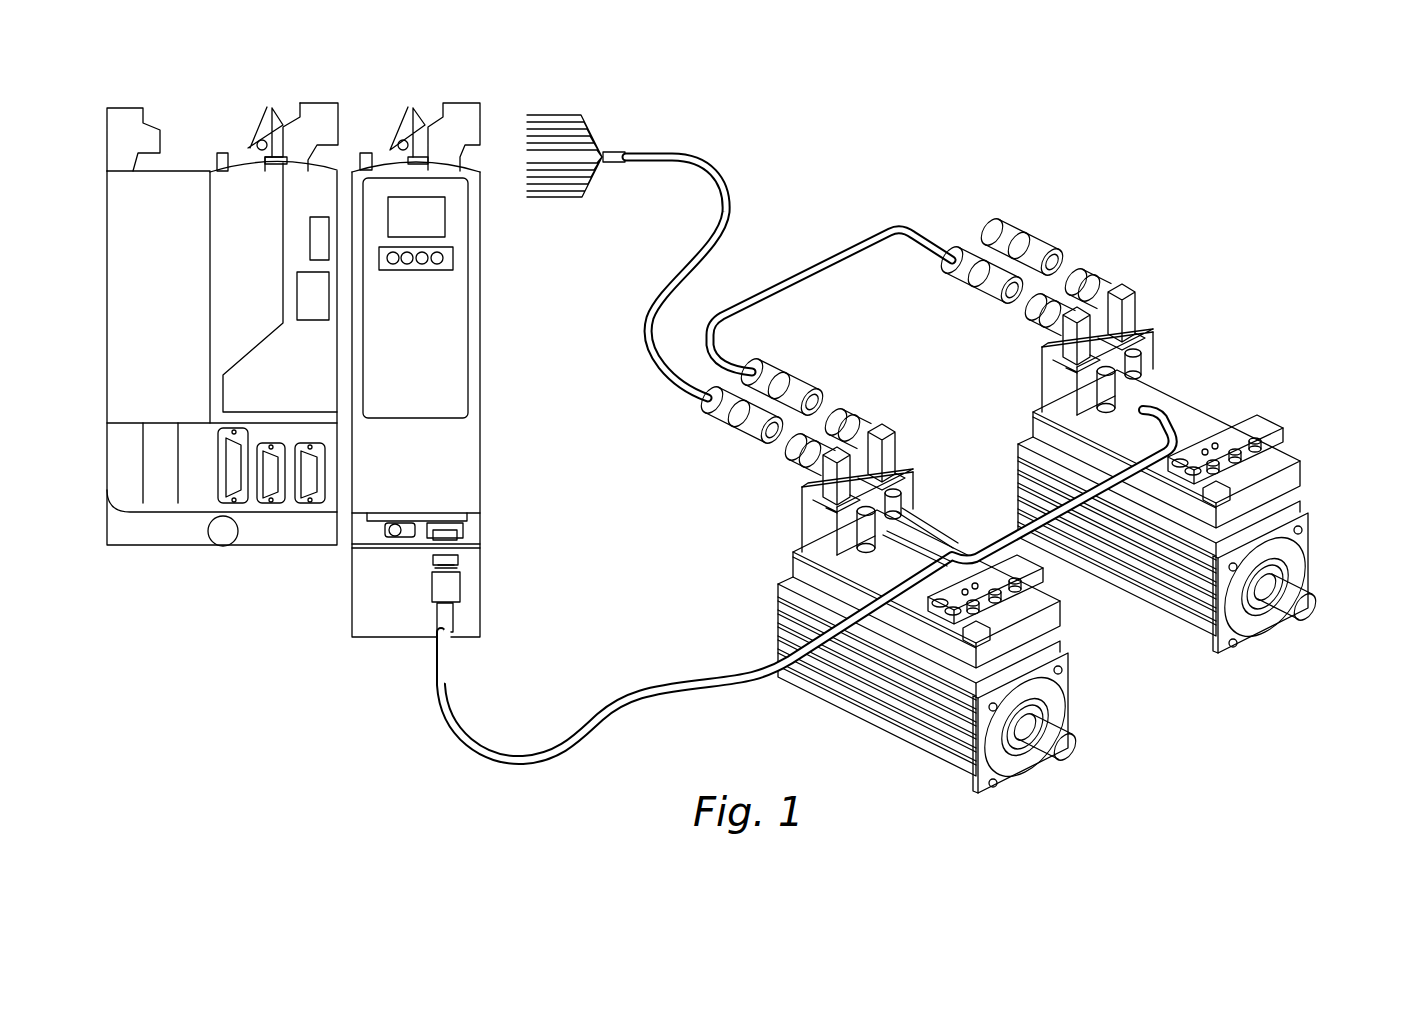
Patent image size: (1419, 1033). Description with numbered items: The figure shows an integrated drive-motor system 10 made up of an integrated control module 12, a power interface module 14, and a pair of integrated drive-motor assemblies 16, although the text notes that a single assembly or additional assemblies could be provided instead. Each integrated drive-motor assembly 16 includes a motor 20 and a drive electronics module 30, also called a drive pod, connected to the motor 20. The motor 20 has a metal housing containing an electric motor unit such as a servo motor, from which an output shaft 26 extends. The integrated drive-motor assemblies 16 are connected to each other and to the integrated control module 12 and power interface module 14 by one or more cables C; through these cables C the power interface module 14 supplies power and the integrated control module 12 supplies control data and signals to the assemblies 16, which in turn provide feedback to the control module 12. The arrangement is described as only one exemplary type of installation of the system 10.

The integrated drive-motor system 10 is at (950, 122).
The integrated control module 12 is at (277, 530).
The power interface module 14 is at (398, 590).
The integrated drive-motor assembly 16 is at (912, 703).
The motor 20 is at (1072, 694).
The output shaft 26 is at (1073, 748).
The drive electronics module 30 is at (820, 531).
The cable C is at (659, 158).